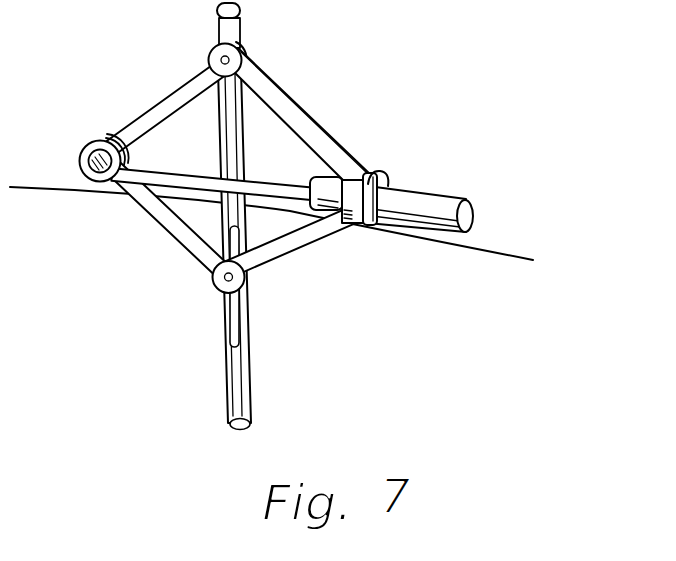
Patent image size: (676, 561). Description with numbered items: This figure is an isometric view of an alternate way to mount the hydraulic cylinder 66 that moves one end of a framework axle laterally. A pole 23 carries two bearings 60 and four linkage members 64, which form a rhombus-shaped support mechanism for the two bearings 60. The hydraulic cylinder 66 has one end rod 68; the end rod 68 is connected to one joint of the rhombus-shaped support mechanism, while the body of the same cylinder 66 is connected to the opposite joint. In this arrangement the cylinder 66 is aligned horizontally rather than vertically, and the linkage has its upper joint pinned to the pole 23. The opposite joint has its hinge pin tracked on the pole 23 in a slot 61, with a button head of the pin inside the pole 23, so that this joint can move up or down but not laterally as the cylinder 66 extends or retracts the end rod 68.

The pole 23 is at (238, 387).
The bearing 60 is at (91, 152).
The slot 61 is at (237, 320).
The linkage member 64 is at (265, 95).
The hydraulic cylinder 66 is at (413, 208).
The end rod 68 is at (167, 172).